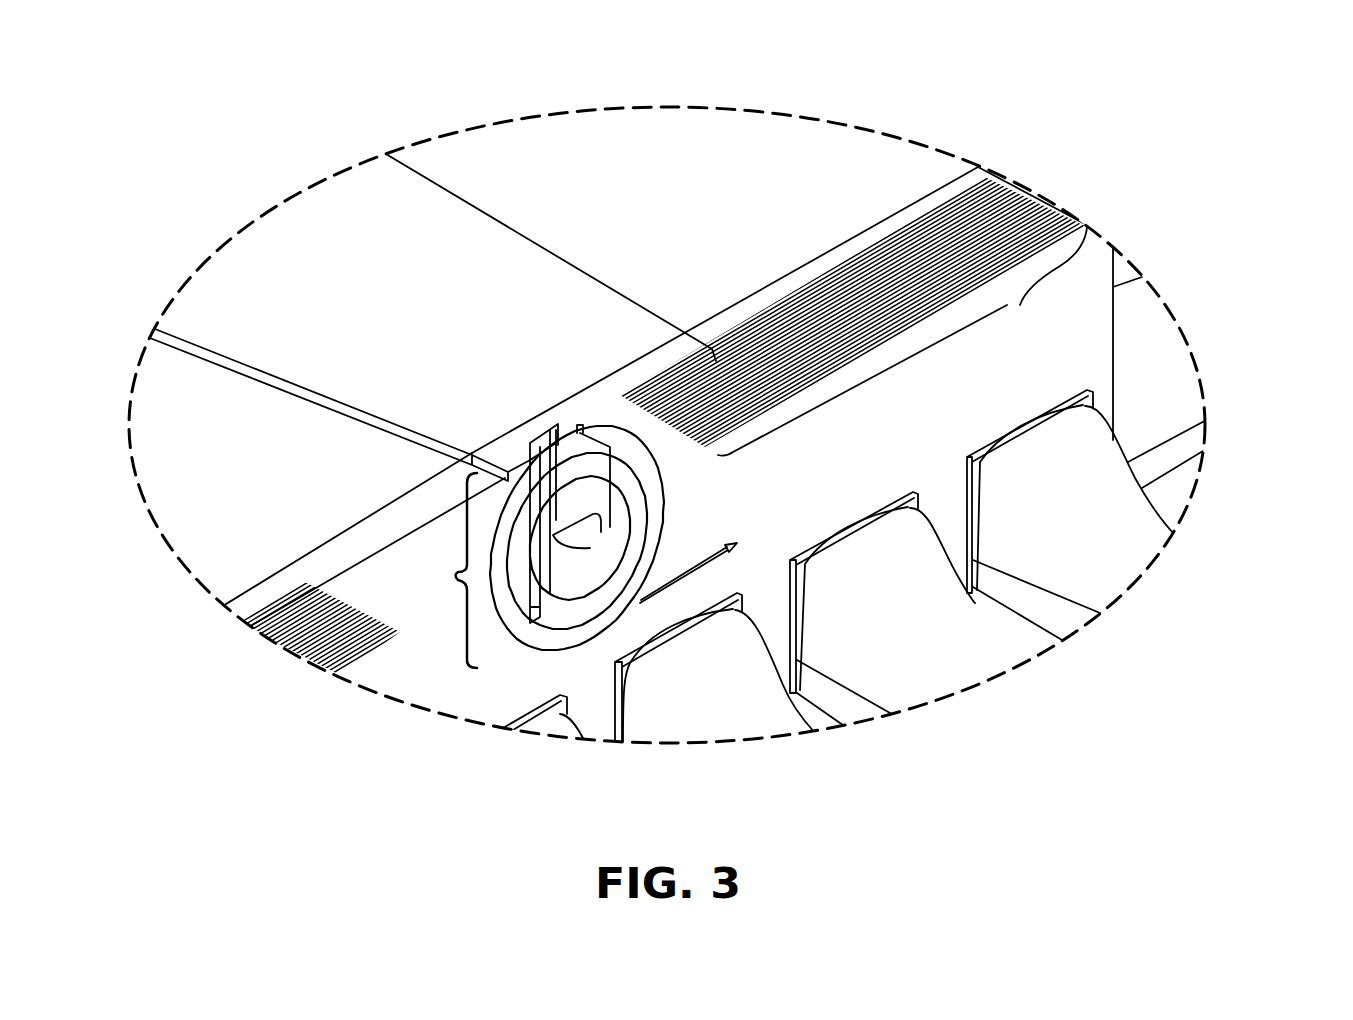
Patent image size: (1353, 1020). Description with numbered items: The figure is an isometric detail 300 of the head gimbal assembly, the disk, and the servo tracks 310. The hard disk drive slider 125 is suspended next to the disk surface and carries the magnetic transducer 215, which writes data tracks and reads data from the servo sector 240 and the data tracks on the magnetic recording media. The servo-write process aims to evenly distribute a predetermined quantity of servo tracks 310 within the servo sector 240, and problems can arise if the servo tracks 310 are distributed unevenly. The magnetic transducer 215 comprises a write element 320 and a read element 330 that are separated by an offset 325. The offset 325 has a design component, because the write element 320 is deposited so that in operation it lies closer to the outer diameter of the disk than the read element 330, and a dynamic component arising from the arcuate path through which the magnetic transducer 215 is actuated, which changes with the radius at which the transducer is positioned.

The isometric detail 300 is at (195, 82).
The read element 330 is at (533, 433).
The servo sector 240 is at (983, 233).
The servo tracks 310 is at (1020, 305).
The hard disk drive slider 125 is at (1107, 353).
The magnetic transducer 215 is at (465, 568).
The offset 325 is at (740, 594).
The write element 320 is at (575, 507).